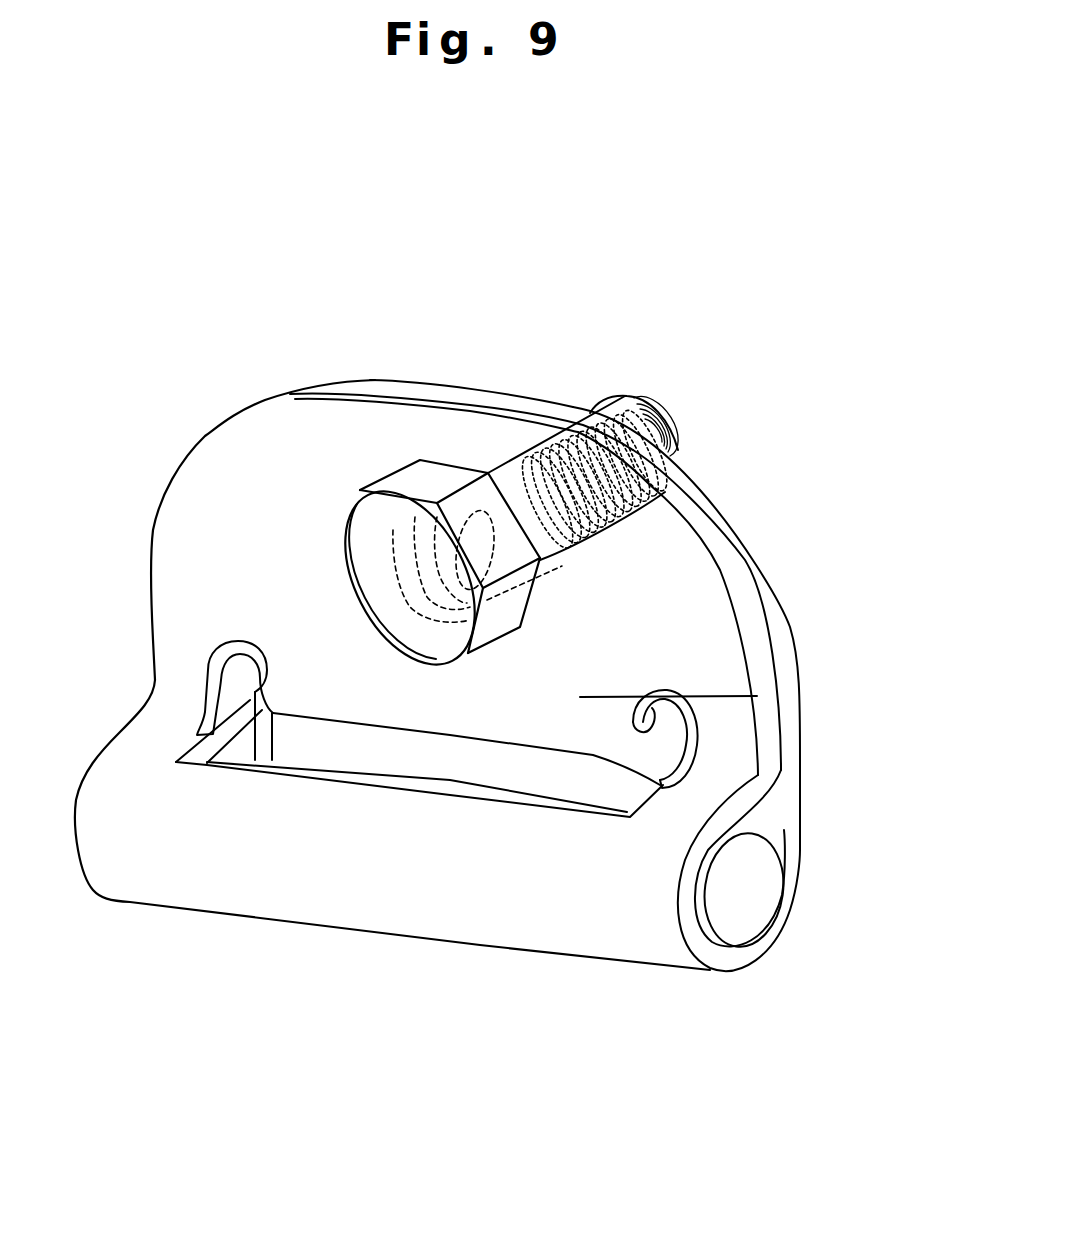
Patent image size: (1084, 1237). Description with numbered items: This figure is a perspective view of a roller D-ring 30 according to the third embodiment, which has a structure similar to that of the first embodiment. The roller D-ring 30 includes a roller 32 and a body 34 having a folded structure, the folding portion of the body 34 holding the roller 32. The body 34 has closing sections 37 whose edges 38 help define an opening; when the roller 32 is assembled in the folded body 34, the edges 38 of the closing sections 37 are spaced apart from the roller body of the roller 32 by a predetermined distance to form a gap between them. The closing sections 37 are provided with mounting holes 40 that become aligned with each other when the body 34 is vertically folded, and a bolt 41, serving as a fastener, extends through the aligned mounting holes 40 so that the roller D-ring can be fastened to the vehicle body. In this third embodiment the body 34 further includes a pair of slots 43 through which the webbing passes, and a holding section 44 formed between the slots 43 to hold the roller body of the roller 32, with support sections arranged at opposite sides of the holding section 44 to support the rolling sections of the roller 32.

The roller D-ring 30 is at (742, 495).
The roller 32 is at (747, 893).
The body 34 is at (777, 578).
The closing sections 37 is at (277, 505).
The edges 38 is at (665, 782).
The mounting holes 40 is at (457, 480).
The bolt 41 is at (375, 523).
The slots 43 is at (443, 755).
The holding section 44 is at (518, 908).